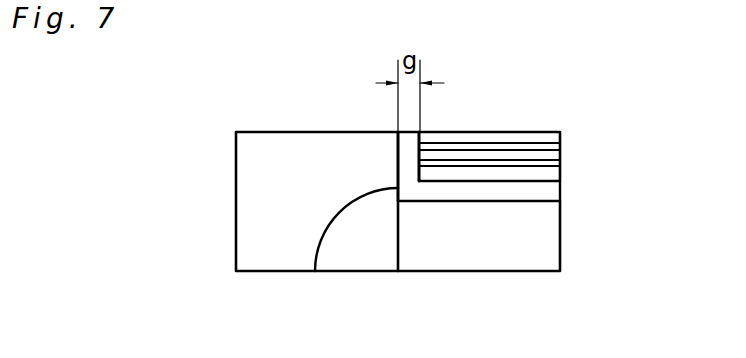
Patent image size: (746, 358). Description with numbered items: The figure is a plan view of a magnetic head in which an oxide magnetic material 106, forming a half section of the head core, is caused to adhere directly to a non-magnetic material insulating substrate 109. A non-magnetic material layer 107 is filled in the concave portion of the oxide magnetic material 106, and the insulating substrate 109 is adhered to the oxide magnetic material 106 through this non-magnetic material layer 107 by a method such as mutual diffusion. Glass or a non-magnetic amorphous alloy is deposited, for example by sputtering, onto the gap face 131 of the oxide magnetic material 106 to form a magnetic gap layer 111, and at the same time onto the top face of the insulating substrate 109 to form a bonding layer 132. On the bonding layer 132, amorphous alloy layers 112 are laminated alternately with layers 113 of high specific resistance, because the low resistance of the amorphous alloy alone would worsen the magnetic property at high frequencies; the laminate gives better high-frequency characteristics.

The oxide magnetic material 106 is at (297, 145).
The non-magnetic material layer 107 is at (366, 256).
The non-magnetic material insulating substrate 109 is at (512, 255).
The magnetic gap layer 111 is at (408, 147).
The amorphous alloy layer 112 is at (553, 133).
The high specific resistance layer 113 is at (552, 147).
The gap face 131 is at (400, 146).
The bonding layer 132 is at (548, 190).